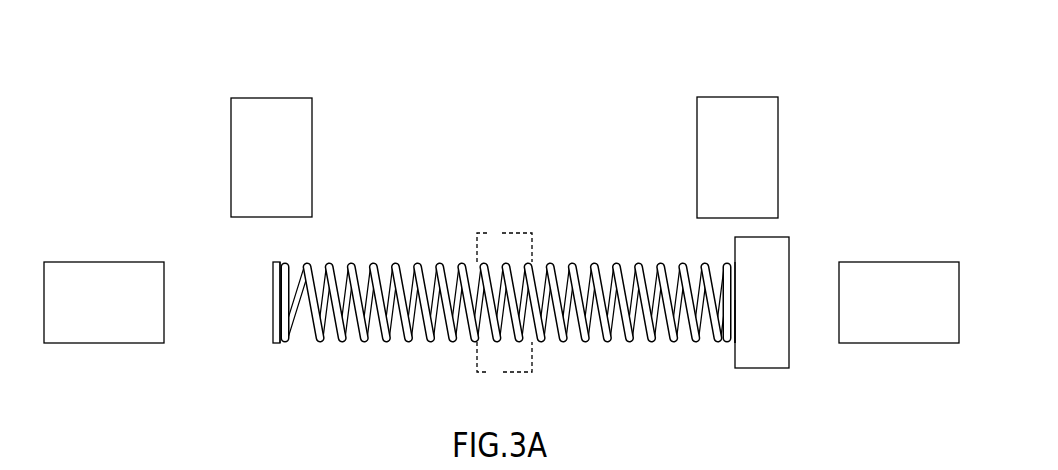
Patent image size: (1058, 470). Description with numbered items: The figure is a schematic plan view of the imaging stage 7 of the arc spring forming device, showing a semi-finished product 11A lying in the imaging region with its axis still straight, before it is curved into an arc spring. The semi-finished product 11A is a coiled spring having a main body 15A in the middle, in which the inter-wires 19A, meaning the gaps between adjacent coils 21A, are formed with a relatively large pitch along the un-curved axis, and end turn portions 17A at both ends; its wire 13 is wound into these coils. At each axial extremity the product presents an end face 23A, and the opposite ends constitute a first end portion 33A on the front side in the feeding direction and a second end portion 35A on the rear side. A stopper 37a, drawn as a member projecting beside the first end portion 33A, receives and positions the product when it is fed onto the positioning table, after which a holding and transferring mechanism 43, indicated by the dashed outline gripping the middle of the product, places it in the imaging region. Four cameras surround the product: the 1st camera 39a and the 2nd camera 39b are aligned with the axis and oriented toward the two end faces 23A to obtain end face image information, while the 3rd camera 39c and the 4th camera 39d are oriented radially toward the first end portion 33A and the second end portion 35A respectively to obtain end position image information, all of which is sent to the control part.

The imaging stage 7 is at (604, 108).
The semi-finished product 11A is at (374, 250).
The wire 13 is at (677, 262).
The main body 15A is at (573, 250).
The end turn portion 17A is at (269, 349).
The inter-wire 19A is at (360, 342).
The coil 21A is at (418, 262).
The end face 23A is at (272, 294).
The first end portion 33A is at (737, 323).
The second end portion 35A is at (272, 328).
The stopper 37a is at (777, 273).
The 1st camera 39a is at (915, 262).
The 2nd camera 39b is at (108, 262).
The 3rd camera 39c is at (740, 97).
The 4th camera 39d is at (288, 98).
The holding and transferring mechanism 43 is at (493, 228).